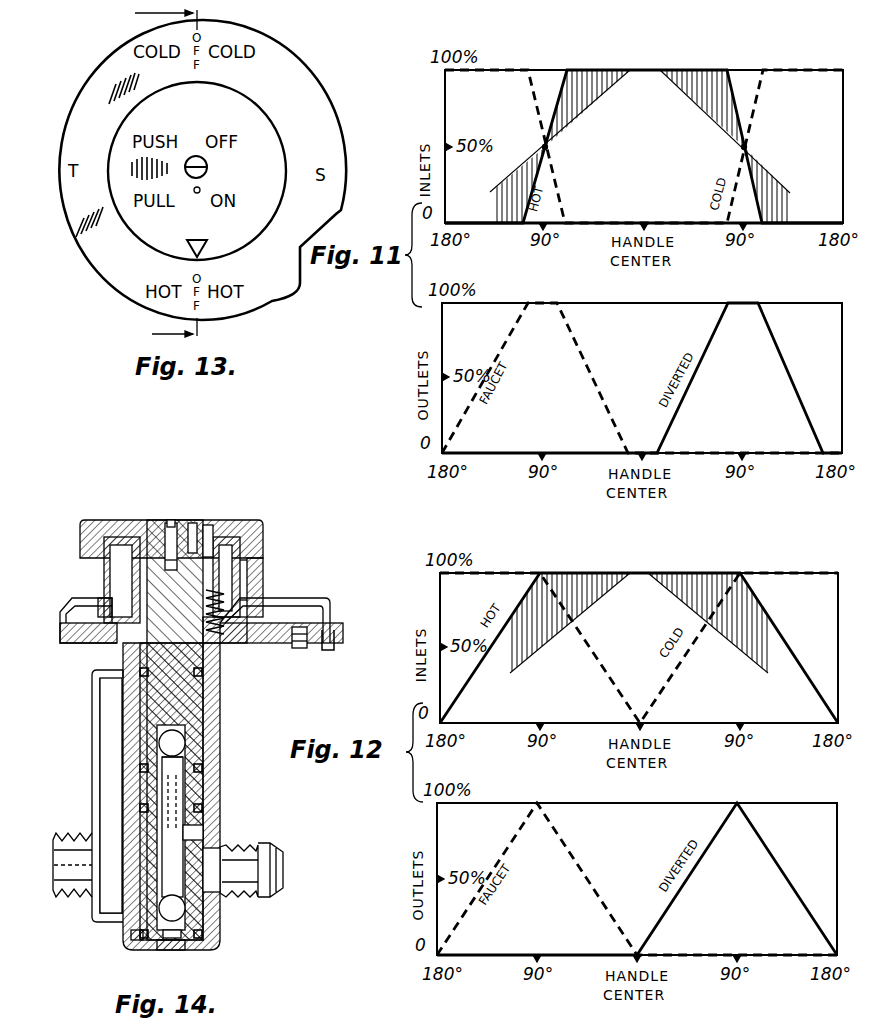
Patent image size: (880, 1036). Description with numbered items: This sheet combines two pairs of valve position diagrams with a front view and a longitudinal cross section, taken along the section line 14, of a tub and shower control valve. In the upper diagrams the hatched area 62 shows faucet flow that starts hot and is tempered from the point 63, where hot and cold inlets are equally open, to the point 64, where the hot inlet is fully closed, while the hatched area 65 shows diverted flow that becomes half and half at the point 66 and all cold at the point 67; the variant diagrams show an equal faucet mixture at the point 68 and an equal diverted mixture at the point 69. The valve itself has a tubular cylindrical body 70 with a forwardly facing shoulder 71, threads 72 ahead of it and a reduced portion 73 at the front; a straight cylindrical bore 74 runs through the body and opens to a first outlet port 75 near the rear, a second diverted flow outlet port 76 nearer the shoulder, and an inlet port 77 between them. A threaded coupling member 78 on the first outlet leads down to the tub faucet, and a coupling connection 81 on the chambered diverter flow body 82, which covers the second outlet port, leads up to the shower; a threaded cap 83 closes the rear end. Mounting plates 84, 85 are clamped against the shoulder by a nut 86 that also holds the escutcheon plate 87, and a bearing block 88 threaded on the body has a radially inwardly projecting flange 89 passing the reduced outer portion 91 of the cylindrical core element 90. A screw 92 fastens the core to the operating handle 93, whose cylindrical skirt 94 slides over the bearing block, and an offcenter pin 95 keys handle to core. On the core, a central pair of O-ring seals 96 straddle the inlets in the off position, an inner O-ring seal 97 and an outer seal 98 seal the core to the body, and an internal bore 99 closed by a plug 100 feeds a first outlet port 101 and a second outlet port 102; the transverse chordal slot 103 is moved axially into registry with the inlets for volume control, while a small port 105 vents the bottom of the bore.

In FIG. 13, the section line 14 is at (154, 179).
In FIG. 11, the hatched area 62 is at (580, 100).
In FIG. 11, the point 63 is at (545, 147).
In FIG. 11, the point 64 is at (523, 164).
In FIG. 11, the hatched area 65 is at (727, 117).
In FIG. 11, the point 66 is at (745, 148).
In FIG. 11, the point 67 is at (767, 168).
In FIG. 12, the point 68 is at (538, 648).
In FIG. 12, the point 69 is at (735, 648).
In FIG. 14, the tubular cylindrical body 70 is at (212, 723).
In FIG. 14, the shoulder 71 is at (222, 647).
In FIG. 14, the threads 72 is at (222, 592).
In FIG. 14, the reduced portion 73 is at (215, 572).
In FIG. 14, the cylindrical bore 74 is at (205, 754).
In FIG. 14, the first outlet port 75 is at (206, 870).
In FIG. 14, the second diverted flow outlet port 76 is at (120, 708).
In FIG. 14, the inlet port 77 is at (176, 781).
In FIG. 14, the threaded coupling member 78 is at (243, 851).
In FIG. 14, the coupling connection 81 is at (75, 898).
In FIG. 14, the chambered diverter flow body 82 is at (101, 913).
In FIG. 14, the threaded cap 83 is at (138, 942).
In FIG. 14, the mounting plate 84 is at (327, 645).
In FIG. 14, the mounting plate 85 is at (296, 640).
In FIG. 14, the nut 86 is at (102, 600).
In FIG. 13, the escutcheon plate 87 is at (311, 115).
In FIG. 14, the escutcheon plate 87 is at (331, 602).
In FIG. 14, the bearing block 88 is at (248, 546).
In FIG. 14, the radially inwardly projecting flange 89 is at (215, 528).
In FIG. 14, the cylindrical core element 90 is at (197, 700).
In FIG. 14, the reduced outer portion 91 is at (149, 537).
In FIG. 13, the screw 92 is at (207, 166).
In FIG. 14, the screw 92 is at (169, 522).
In FIG. 13, the operating handle 93 is at (247, 111).
In FIG. 14, the operating handle 93 is at (105, 520).
In FIG. 14, the cylindrical skirt 94 is at (244, 579).
In FIG. 13, the offcenter pin 95 is at (200, 189).
In FIG. 14, the offcenter pin 95 is at (196, 523).
In FIG. 14, the O-ring seals 96 is at (142, 808).
In FIG. 14, the inner O-ring seal 97 is at (207, 948).
In FIG. 14, the outer seal 98 is at (139, 672).
In FIG. 14, the internal bore 99 is at (168, 842).
In FIG. 14, the plug 100 is at (168, 940).
In FIG. 14, the first outlet port 101 is at (180, 912).
In FIG. 14, the second outlet port 102 is at (165, 750).
In FIG. 14, the transverse chordal slot 103 is at (195, 834).
In FIG. 14, the small port 105 is at (176, 952).